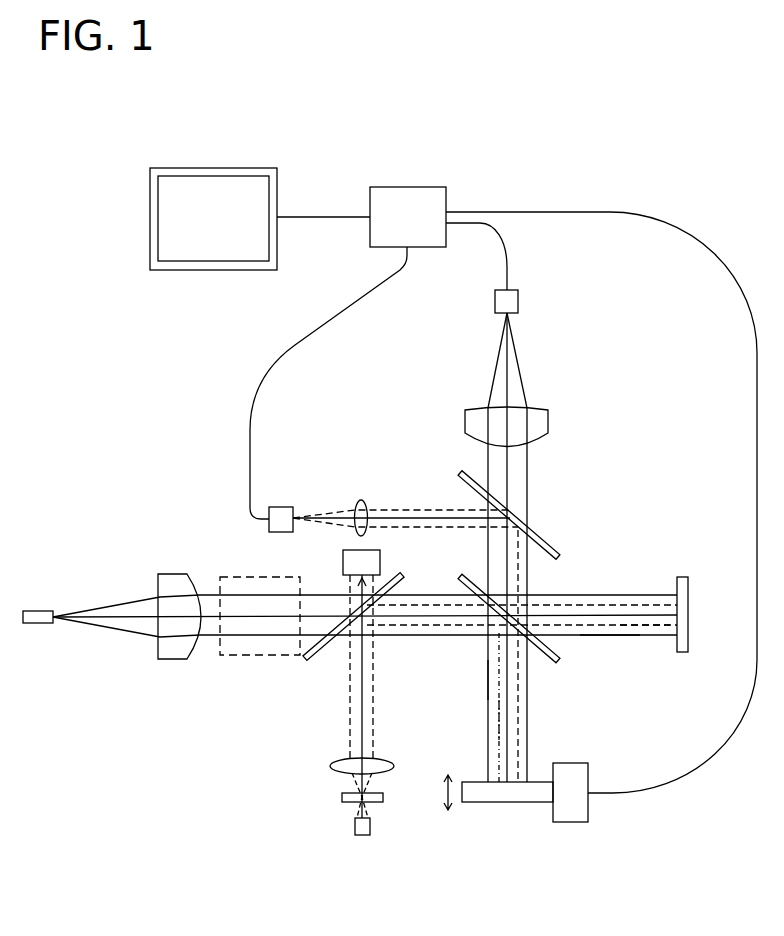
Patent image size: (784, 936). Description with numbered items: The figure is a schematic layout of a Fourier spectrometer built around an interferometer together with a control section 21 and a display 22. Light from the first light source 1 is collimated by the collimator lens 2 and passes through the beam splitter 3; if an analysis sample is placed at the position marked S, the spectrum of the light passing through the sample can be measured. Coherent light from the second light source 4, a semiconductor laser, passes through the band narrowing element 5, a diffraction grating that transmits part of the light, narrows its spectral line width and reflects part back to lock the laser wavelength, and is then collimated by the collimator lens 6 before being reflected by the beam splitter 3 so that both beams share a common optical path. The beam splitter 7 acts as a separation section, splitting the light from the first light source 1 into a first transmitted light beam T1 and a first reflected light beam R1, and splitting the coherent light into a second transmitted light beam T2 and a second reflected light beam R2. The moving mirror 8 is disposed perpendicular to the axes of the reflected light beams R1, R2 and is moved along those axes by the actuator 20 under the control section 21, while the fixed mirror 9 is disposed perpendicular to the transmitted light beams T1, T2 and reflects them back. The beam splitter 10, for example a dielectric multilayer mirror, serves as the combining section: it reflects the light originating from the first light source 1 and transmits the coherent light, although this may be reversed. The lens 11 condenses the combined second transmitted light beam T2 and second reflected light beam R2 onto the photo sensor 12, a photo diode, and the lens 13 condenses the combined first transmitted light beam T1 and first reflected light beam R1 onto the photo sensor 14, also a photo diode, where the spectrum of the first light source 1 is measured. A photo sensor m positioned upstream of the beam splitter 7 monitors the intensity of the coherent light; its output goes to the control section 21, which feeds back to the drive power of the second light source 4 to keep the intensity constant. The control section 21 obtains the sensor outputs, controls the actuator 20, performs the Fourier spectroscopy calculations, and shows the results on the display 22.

The first light source 1 is at (35, 624).
The collimator lens 2 is at (168, 660).
The beam splitter 3 is at (313, 663).
The second light source 4 is at (362, 838).
The band narrowing element 5 is at (340, 800).
The collimator lens 6 is at (330, 763).
The beam splitter 7 is at (560, 667).
The moving mirror 8 is at (497, 803).
The fixed mirror 9 is at (681, 576).
The beam splitter 10 is at (550, 542).
The lens 11 is at (360, 499).
The photo sensor 12 is at (278, 506).
The lens 13 is at (548, 418).
The photo sensor 14 is at (518, 298).
The actuator 20 is at (570, 823).
The control section 21 is at (405, 186).
The display 22 is at (210, 167).
The photo sensor m is at (382, 559).
The analysis sample S is at (258, 657).
The first reflected light beam R1 is at (486, 670).
The second reflected light beam R2 is at (497, 713).
The first transmitted light beam T1 is at (610, 636).
The second transmitted light beam T2 is at (652, 627).